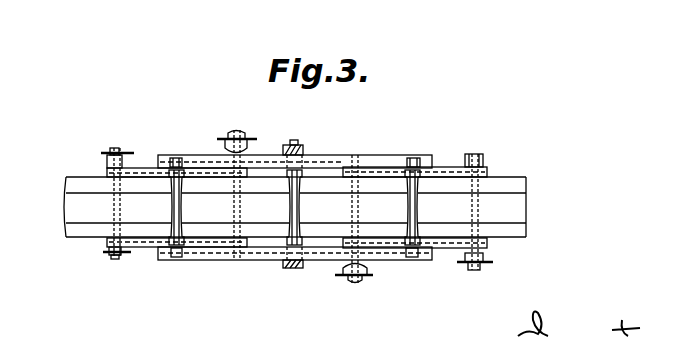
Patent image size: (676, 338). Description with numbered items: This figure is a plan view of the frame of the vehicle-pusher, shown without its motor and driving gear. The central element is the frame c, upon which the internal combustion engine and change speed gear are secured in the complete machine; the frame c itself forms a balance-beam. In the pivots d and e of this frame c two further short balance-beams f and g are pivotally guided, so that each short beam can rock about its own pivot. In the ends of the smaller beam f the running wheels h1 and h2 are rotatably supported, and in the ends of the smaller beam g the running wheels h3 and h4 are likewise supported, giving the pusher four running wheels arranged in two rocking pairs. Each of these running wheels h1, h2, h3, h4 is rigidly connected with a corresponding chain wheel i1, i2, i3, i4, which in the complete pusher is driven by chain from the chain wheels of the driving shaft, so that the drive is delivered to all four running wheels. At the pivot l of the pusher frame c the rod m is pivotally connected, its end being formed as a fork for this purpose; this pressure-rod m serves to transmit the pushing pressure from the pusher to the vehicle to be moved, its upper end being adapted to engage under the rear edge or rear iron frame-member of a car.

The running wheel h1 is at (86, 220).
The running wheel h2 is at (214, 220).
The running wheel h3 is at (334, 220).
The running wheel h4 is at (526, 222).
The pivot d is at (178, 165).
The pivot e is at (415, 178).
The pivot l is at (284, 258).
The rod m is at (298, 148).
The frame c is at (337, 157).
The balance-beam f is at (137, 172).
The balance-beam g is at (448, 170).
The chain wheel i1 is at (110, 150).
The chain wheel i2 is at (238, 138).
The chain wheel i3 is at (353, 270).
The chain wheel i4 is at (485, 262).